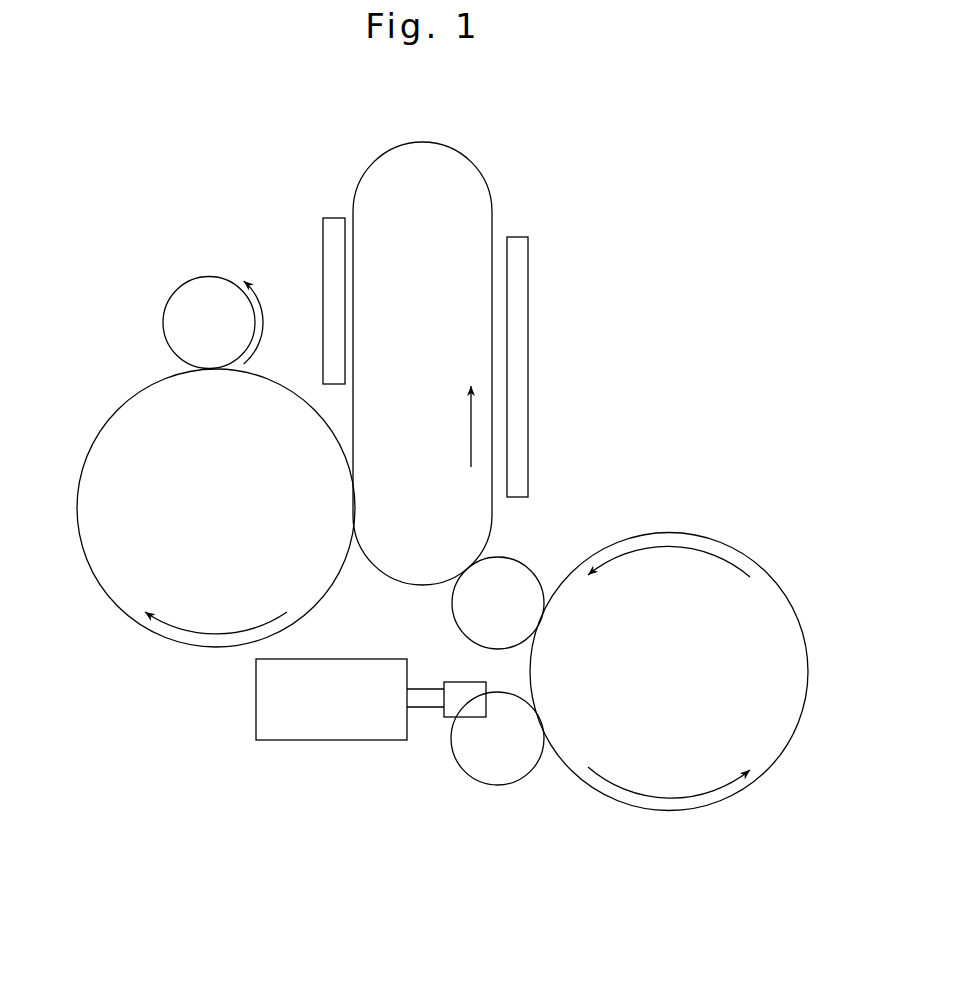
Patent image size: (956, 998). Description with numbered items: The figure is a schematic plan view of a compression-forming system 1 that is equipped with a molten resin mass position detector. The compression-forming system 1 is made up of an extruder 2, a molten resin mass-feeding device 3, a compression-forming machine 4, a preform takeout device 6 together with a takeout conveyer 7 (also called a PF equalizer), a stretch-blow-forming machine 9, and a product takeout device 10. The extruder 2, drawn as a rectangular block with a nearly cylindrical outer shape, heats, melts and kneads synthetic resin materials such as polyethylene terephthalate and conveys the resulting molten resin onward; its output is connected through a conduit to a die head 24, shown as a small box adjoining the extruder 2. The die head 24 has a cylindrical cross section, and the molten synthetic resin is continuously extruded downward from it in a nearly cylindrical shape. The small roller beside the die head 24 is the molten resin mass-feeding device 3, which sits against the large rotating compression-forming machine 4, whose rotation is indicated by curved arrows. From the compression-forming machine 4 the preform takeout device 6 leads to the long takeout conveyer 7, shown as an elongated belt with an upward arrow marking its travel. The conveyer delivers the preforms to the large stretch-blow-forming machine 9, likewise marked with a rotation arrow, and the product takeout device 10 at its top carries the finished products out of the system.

The compression-forming system 1 is at (398, 851).
The extruder 2 is at (338, 740).
The molten resin mass-feeding device 3 is at (481, 786).
The compression-forming machine 4 is at (787, 586).
The preform takeout device 6 is at (527, 558).
The takeout conveyer 7 is at (498, 190).
The stretch-blow-forming machine 9 is at (112, 396).
The product takeout device 10 is at (170, 288).
The die head 24 is at (452, 682).